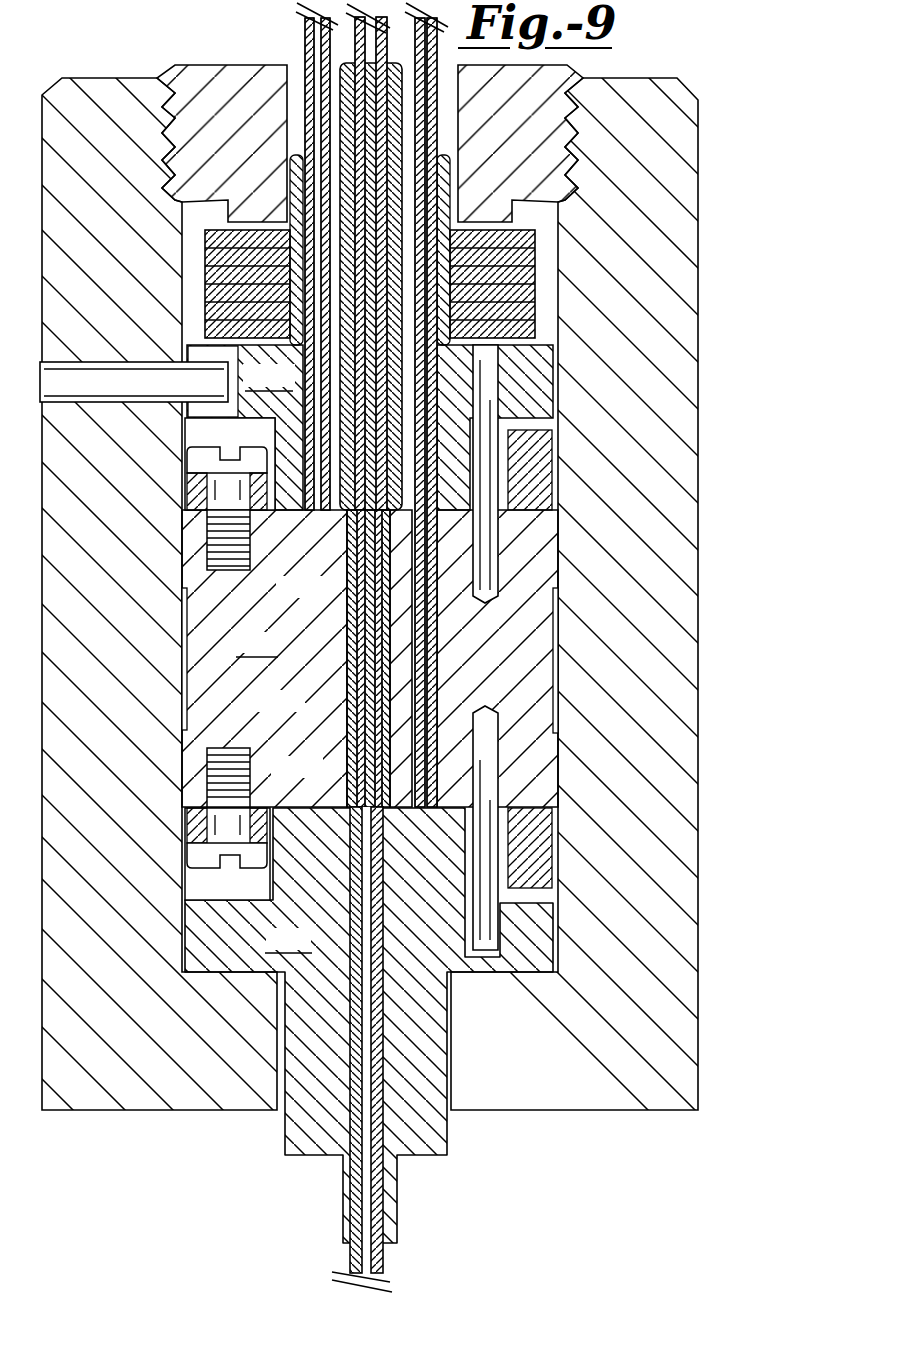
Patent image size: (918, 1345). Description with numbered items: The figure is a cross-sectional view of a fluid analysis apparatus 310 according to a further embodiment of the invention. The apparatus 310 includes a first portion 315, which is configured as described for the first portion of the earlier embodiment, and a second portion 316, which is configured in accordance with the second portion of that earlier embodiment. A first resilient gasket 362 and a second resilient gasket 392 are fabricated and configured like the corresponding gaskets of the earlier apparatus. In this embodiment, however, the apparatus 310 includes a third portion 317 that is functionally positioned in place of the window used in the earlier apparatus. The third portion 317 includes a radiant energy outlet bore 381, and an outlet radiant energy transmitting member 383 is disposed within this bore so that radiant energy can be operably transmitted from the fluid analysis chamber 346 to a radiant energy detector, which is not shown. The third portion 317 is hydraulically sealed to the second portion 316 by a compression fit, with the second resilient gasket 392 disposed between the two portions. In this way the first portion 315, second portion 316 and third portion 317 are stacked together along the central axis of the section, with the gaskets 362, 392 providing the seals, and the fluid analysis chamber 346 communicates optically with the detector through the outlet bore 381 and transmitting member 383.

The apparatus 310 is at (710, 95).
The first portion 315 is at (293, 391).
The second portion 316 is at (278, 657).
The third portion 317 is at (312, 953).
The fluid analysis chamber 346 is at (347, 690).
The first resilient gasket 362 is at (340, 513).
The radiant energy outlet bore 381 is at (350, 1250).
The outlet radiant energy transmitting member 383 is at (376, 1262).
The second resilient gasket 392 is at (335, 805).